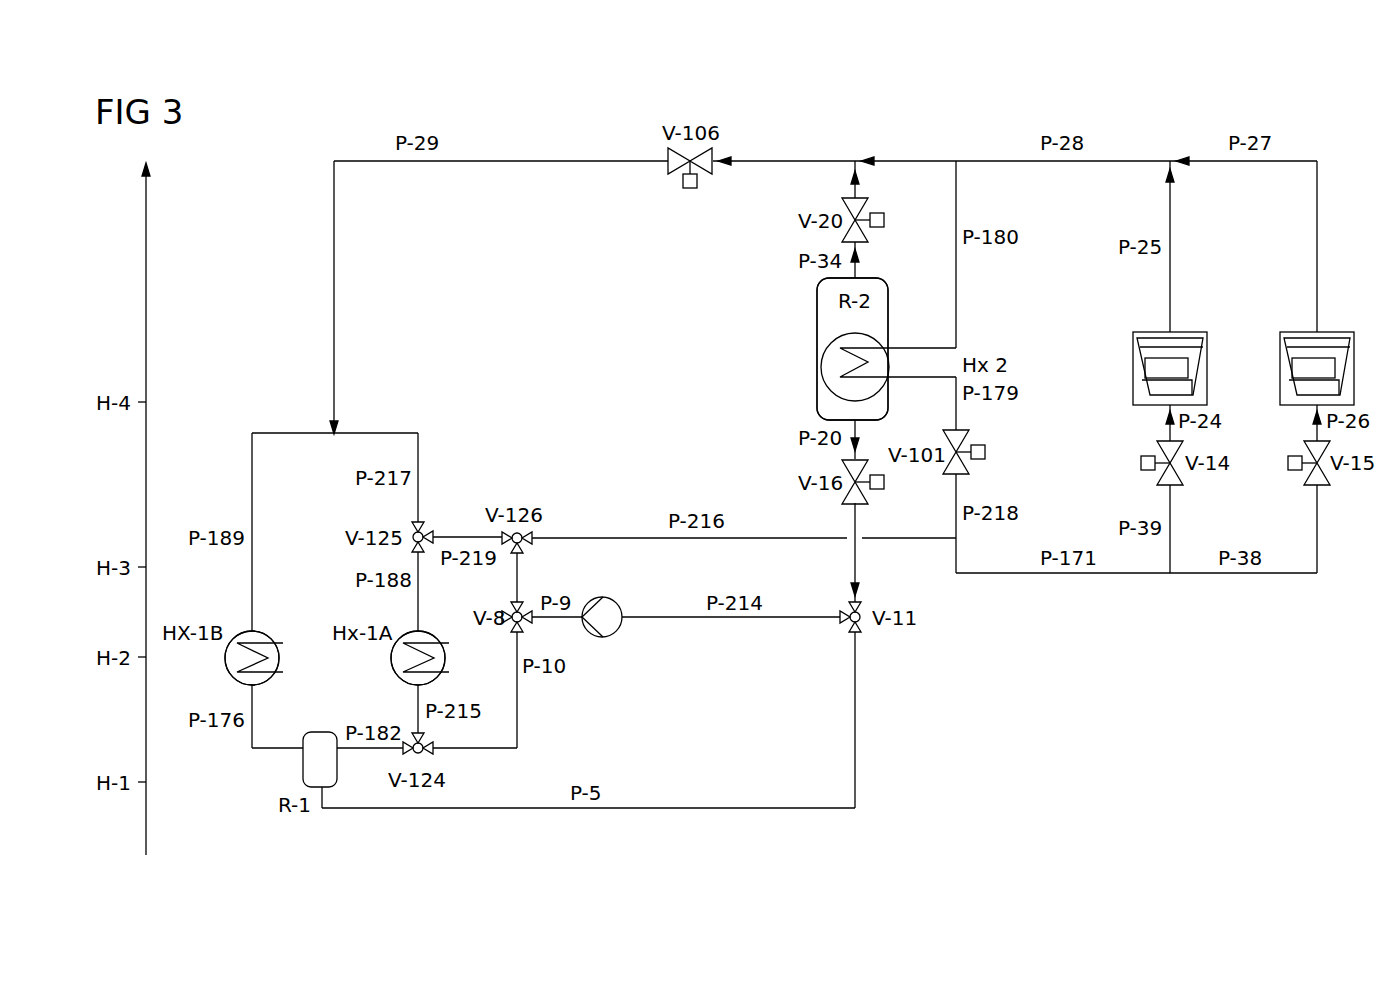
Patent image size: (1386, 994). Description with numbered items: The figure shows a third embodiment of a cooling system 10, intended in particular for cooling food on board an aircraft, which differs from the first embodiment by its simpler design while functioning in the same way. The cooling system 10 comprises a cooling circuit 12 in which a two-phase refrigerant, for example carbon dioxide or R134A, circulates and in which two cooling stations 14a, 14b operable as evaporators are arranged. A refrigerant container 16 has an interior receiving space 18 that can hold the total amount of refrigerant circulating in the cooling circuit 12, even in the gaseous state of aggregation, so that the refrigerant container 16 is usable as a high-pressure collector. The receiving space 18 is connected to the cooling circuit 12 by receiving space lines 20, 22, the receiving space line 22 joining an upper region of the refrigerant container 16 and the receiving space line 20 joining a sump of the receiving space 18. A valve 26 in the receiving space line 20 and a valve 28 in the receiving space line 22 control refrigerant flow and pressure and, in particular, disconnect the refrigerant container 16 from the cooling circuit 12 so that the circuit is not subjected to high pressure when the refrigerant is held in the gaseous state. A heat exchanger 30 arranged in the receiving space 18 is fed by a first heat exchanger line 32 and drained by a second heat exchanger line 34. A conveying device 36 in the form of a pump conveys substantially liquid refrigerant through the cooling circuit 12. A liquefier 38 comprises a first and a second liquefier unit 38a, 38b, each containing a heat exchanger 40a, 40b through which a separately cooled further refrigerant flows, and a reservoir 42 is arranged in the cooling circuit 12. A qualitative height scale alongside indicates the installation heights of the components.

The cooling system 10 is at (1050, 631).
The cooling circuit 12 is at (549, 158).
The cooling station 14a is at (1180, 330).
The cooling station 14b is at (1325, 330).
The refrigerant container 16 is at (875, 280).
The receiving space 18 is at (822, 320).
The receiving space line 20 is at (858, 512).
The receiving space line 22 is at (862, 174).
The valve 26 is at (845, 498).
The valve 28 is at (838, 208).
The heat exchanger 30 is at (872, 350).
The first heat exchanger line 32 is at (968, 440).
The second heat exchanger line 34 is at (958, 290).
The conveying device 36 is at (610, 640).
The liquefier 38 is at (492, 697).
The first liquefier unit 38a is at (228, 660).
The second liquefier unit 38b is at (394, 660).
The heat exchanger 40a is at (268, 636).
The heat exchanger 40b is at (434, 636).
The reservoir 42 is at (300, 772).